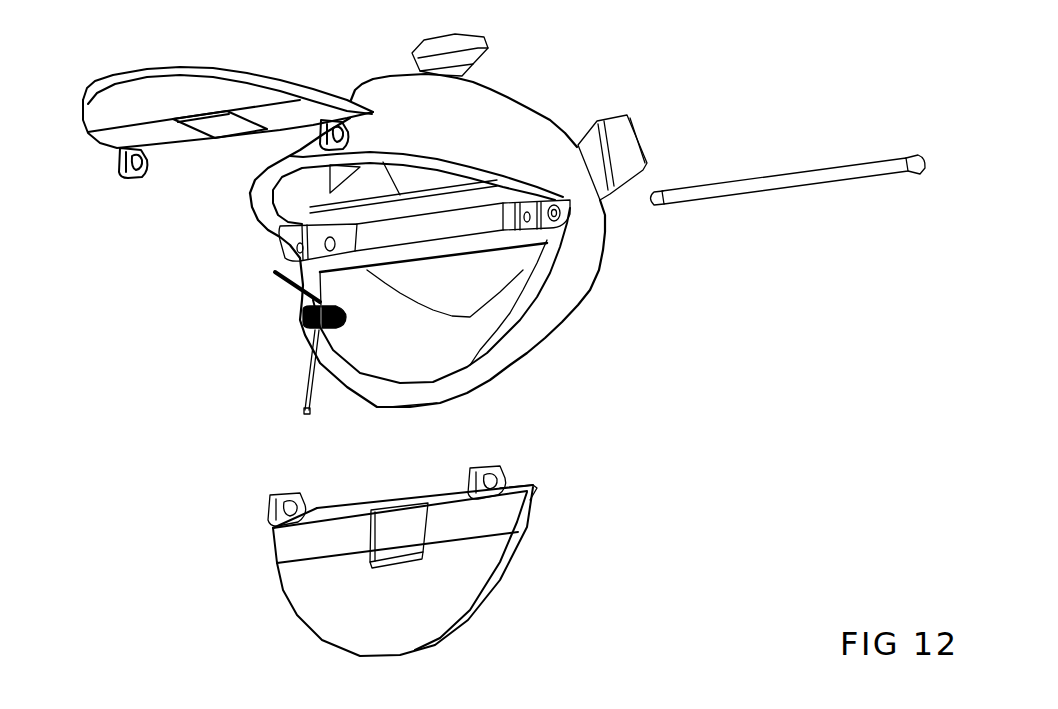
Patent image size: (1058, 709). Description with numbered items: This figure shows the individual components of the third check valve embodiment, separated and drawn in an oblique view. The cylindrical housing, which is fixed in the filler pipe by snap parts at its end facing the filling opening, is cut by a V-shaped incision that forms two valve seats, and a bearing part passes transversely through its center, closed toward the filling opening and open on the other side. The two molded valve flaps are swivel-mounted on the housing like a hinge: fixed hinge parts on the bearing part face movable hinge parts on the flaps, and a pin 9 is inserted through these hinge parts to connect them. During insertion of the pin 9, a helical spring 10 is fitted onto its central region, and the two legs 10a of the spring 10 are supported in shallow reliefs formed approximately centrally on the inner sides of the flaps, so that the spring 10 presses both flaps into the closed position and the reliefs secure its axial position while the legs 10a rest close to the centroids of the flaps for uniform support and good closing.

The pin 9 is at (677, 204).
The helical spring 10 is at (307, 315).
The legs 10a is at (307, 407).